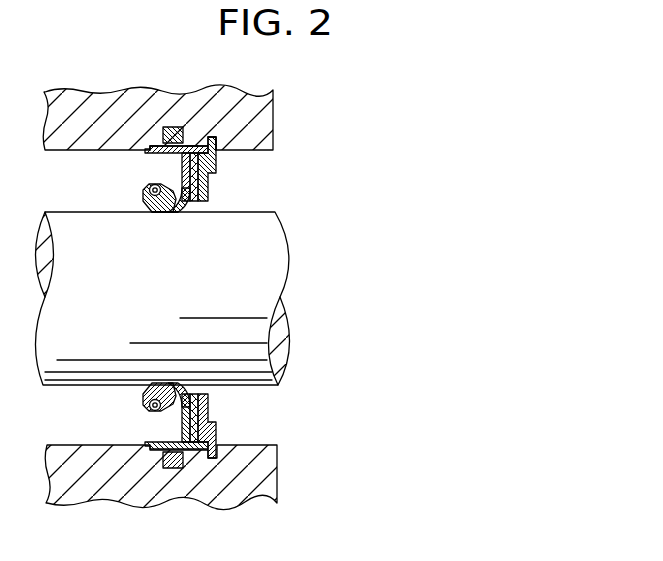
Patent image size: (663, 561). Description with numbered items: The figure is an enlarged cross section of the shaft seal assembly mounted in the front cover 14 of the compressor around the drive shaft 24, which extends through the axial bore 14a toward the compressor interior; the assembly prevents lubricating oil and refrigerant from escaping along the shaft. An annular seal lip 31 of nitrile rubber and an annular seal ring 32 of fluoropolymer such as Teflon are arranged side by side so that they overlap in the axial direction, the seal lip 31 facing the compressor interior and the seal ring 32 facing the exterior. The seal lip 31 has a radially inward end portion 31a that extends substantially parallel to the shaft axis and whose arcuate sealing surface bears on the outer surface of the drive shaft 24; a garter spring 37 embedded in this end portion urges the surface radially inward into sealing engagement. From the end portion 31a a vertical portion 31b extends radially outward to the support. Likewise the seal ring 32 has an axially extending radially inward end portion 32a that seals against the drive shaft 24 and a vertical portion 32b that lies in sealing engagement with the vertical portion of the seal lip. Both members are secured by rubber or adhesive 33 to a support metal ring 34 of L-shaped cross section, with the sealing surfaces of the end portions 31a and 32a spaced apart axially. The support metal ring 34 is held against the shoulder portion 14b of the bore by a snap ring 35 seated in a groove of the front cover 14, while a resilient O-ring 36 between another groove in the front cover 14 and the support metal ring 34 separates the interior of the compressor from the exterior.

The front cover 14 is at (272, 103).
The axial bore 14a is at (272, 150).
The shoulder portion 14b is at (152, 143).
The drive shaft 24 is at (280, 263).
The annular seal lip 31 is at (145, 210).
The radially inward end portion 31a is at (159, 212).
The vertical portion 31b is at (183, 170).
The annular seal ring 32 is at (187, 203).
The radially inward end portion 32a is at (175, 213).
The vertical portion 32b is at (192, 147).
The rubber or adhesive 33 is at (208, 205).
The support metal ring 34 is at (210, 190).
The snap ring 35 is at (216, 160).
The O-ring 36 is at (173, 127).
The garter spring 37 is at (149, 189).